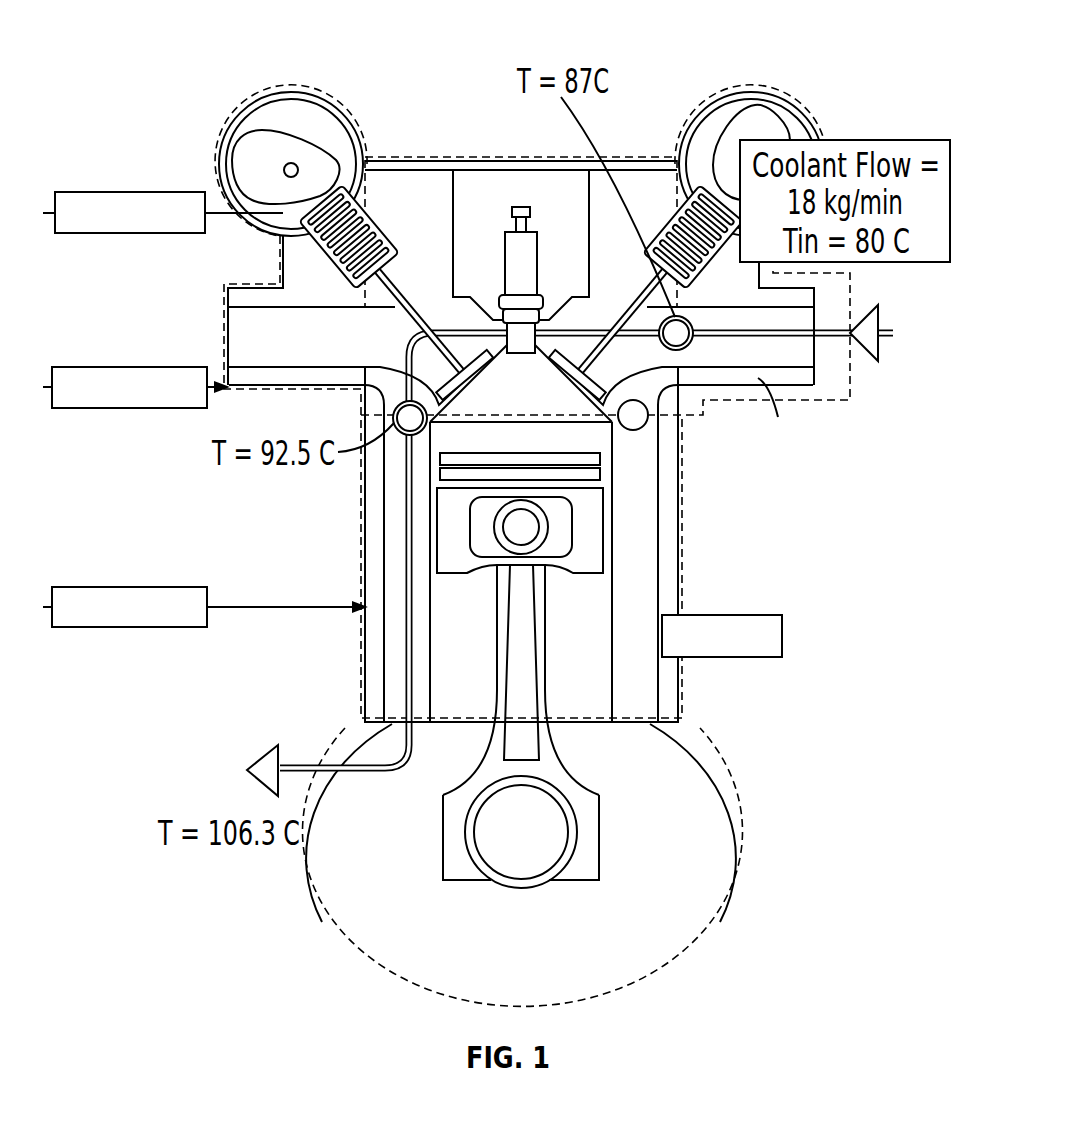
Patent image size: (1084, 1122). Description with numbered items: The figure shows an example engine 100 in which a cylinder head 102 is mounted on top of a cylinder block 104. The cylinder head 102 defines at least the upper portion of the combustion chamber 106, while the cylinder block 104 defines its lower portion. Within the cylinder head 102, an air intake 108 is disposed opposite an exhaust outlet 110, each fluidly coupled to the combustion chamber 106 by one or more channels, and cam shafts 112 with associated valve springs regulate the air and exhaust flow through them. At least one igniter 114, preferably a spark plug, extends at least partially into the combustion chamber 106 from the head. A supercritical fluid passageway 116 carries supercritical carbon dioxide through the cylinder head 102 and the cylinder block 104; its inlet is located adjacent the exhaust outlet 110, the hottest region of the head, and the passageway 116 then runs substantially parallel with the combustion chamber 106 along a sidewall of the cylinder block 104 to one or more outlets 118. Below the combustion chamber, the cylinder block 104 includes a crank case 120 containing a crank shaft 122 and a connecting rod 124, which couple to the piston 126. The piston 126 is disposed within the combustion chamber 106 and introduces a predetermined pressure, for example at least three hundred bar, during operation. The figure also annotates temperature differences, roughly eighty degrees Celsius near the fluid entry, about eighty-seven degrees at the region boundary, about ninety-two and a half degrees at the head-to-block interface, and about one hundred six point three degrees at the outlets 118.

The engine 100 is at (224, 36).
The cylinder head 102 is at (417, 157).
The cylinder block 104 is at (683, 723).
The combustion chamber 106 is at (640, 661).
The air intake 108 is at (222, 330).
The exhaust outlet 110 is at (820, 358).
The cam shafts 112 is at (222, 116).
The igniter 114 is at (520, 200).
The supercritical fluid passageway 116 is at (880, 326).
The outlets 118 is at (240, 766).
The crank case 120 is at (680, 830).
The crank shaft 122 is at (605, 855).
The connecting rod 124 is at (520, 742).
The piston 126 is at (590, 519).